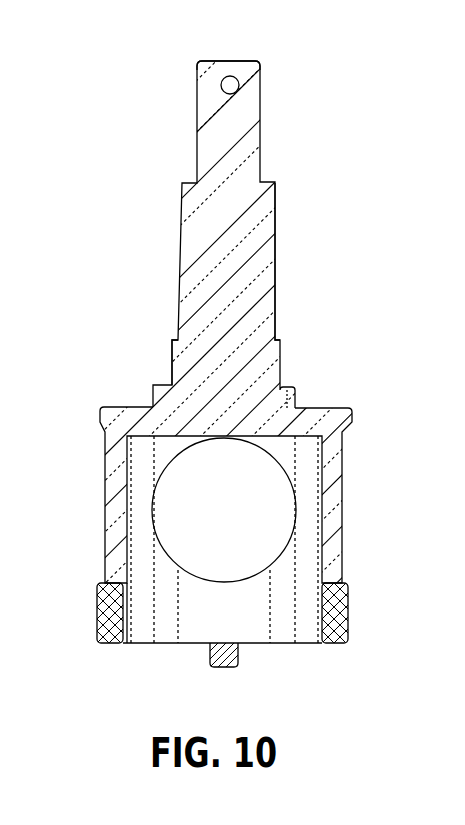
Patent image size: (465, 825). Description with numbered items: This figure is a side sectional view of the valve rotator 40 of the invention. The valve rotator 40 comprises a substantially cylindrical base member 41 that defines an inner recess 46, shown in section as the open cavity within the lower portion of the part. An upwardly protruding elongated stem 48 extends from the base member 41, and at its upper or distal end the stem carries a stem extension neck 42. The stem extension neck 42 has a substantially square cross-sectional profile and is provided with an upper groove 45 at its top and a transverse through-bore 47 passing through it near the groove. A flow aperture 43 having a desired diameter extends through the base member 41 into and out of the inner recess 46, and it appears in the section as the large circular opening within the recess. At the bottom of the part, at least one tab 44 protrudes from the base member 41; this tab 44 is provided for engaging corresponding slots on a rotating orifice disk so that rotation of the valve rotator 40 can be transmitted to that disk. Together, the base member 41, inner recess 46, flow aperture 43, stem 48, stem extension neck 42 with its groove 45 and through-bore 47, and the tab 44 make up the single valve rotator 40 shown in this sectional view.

The valve rotator 40 is at (232, 358).
The base member 41 is at (110, 510).
The stem extension neck 42 is at (236, 207).
The flow aperture 43 is at (263, 570).
The tab 44 is at (226, 667).
The upper groove 45 is at (232, 62).
The inner recess 46 is at (170, 625).
The transverse through-bore 47 is at (222, 88).
The elongated stem 48 is at (240, 287).